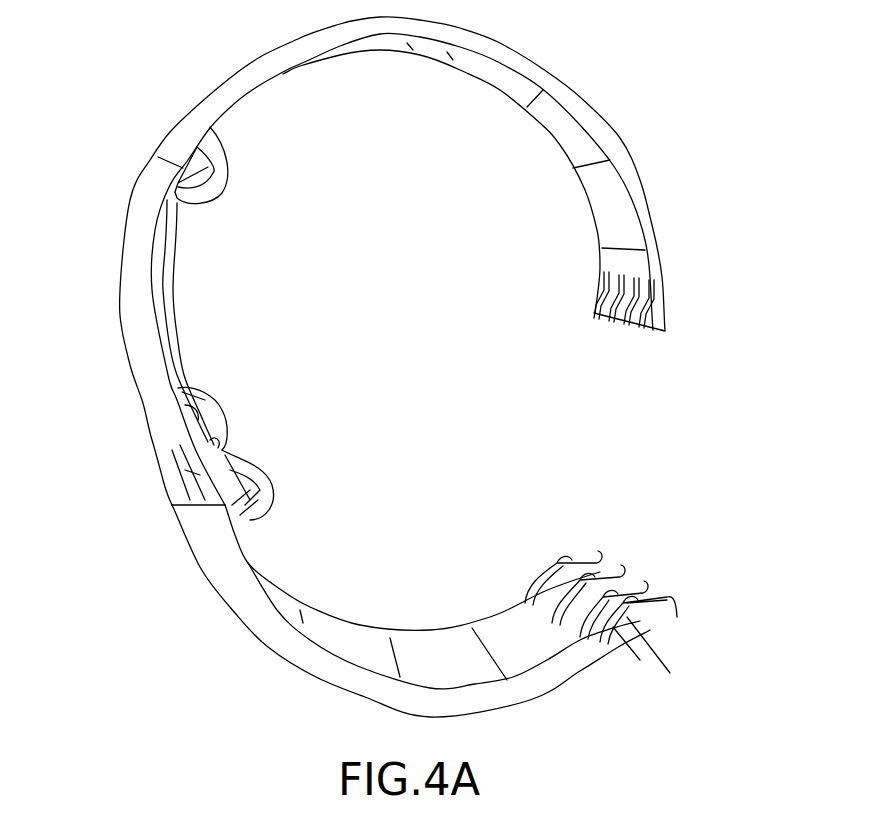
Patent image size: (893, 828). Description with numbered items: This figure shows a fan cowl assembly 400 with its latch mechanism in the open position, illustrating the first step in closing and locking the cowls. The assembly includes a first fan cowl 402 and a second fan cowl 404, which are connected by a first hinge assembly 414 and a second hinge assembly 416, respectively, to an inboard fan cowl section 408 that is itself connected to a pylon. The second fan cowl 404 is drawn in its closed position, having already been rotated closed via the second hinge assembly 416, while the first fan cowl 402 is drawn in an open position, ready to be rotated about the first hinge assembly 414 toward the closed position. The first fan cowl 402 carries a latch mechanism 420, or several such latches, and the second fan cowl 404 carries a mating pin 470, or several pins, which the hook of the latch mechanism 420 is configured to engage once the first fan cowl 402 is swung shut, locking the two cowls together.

The fan cowl assembly 400 is at (138, 50).
The first fan cowl 402 is at (425, 647).
The second fan cowl 404 is at (498, 75).
The inboard fan cowl section 408 is at (143, 317).
The first hinge assembly 414 is at (266, 423).
The second hinge assembly 416 is at (255, 212).
The latch mechanism 420 is at (653, 607).
The mating pin 470 is at (647, 330).